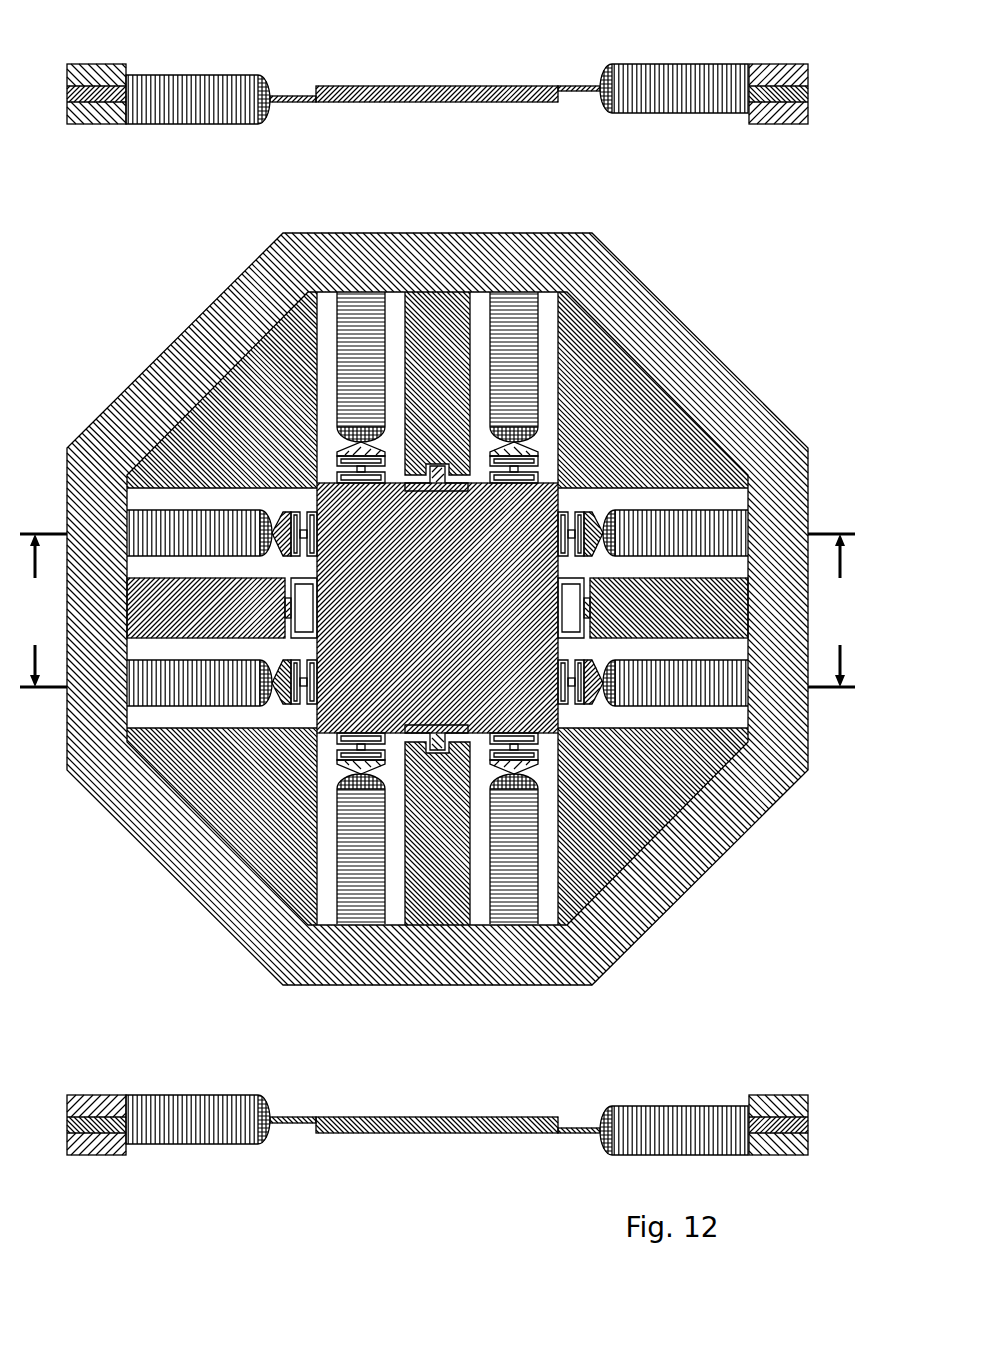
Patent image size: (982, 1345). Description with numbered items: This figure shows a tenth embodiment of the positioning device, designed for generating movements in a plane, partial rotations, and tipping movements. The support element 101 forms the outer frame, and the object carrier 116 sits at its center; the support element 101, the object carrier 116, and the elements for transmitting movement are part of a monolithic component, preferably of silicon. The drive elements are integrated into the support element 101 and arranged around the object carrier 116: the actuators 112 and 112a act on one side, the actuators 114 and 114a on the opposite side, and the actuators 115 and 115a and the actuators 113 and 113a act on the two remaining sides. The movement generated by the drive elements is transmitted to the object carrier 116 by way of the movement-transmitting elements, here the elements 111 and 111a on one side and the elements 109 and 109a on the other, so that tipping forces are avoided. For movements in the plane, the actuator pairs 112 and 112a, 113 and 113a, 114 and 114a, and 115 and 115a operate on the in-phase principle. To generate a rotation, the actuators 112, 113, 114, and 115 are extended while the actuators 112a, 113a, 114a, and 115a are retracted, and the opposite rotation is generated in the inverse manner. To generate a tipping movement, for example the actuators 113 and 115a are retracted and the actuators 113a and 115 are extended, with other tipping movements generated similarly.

The support element 101 is at (777, 91).
The object carrier 116 is at (385, 573).
The drive element 112 is at (517, 387).
The drive element 112a is at (348, 403).
The drive element 114 is at (353, 867).
The drive element 114a is at (507, 857).
The drive element 115 is at (205, 523).
The drive element 115a is at (179, 1117).
The drive element 113 is at (680, 1126).
The drive element 113a is at (697, 535).
The element for transmitting movement from the drive element to the object carrier 111 is at (295, 1117).
The element for transmitting movement from the drive element to the object carrier 111a is at (285, 525).
The element for transmitting movement from the drive element to the object carrier 109 is at (575, 1126).
The element for transmitting movement from the drive element to the object carrier 109a is at (590, 525).